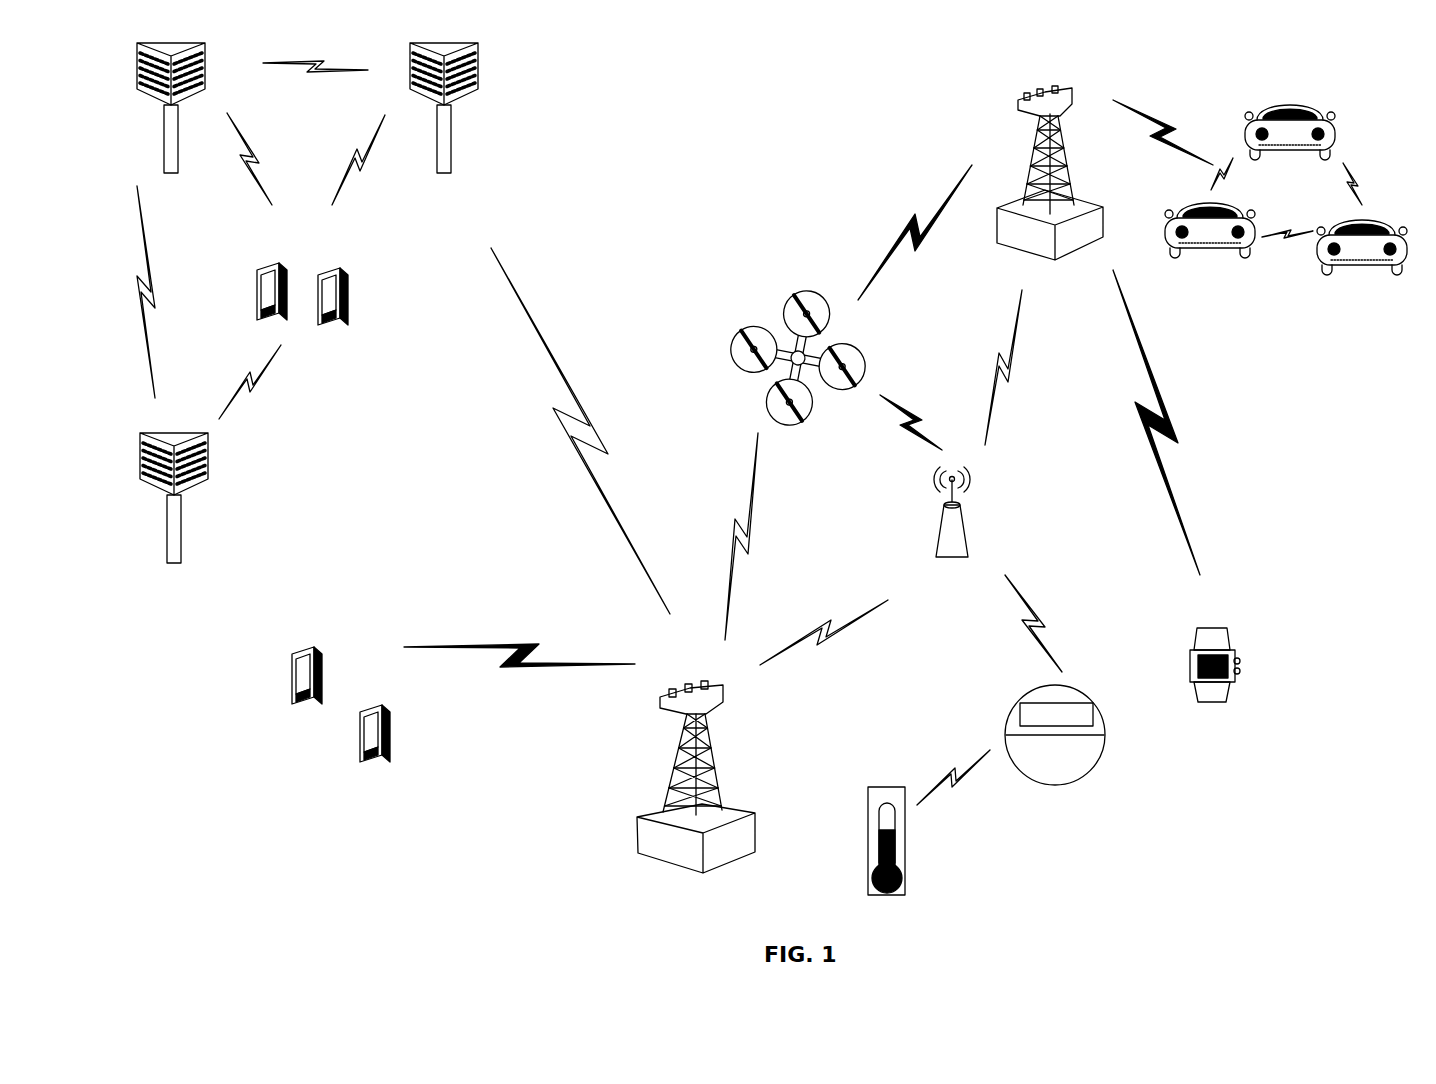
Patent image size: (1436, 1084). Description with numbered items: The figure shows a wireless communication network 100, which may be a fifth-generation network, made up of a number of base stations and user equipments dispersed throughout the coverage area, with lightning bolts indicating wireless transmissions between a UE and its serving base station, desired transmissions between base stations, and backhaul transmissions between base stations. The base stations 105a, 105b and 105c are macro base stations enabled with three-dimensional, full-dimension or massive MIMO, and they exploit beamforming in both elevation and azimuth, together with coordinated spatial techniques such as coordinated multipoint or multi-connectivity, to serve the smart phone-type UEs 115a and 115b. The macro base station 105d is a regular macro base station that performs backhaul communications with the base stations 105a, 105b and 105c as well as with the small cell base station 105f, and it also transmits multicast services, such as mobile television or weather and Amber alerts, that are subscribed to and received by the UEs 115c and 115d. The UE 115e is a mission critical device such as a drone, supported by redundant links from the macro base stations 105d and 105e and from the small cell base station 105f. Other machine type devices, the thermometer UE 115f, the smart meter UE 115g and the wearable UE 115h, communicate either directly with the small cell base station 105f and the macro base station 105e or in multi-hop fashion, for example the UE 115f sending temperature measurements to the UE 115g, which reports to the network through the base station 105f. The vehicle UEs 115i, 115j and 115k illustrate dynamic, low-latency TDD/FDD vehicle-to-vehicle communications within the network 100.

The wireless communication network 100 is at (740, 196).
The base station 105a is at (164, 150).
The base station 105b is at (452, 146).
The base station 105c is at (167, 546).
The macro base station 105d is at (657, 862).
The macro base station 105e is at (1013, 248).
The small cell base station 105f is at (938, 554).
The UE 115a is at (258, 272).
The UE 115b is at (350, 284).
The UE 115c is at (292, 662).
The UE 115d is at (389, 722).
The UE 115e is at (735, 347).
The UE 115f is at (905, 884).
The UE 115g is at (1080, 777).
The UE 115h is at (1228, 696).
The UE 115i is at (1305, 106).
The UE 115j is at (1386, 272).
The UE 115k is at (1185, 258).